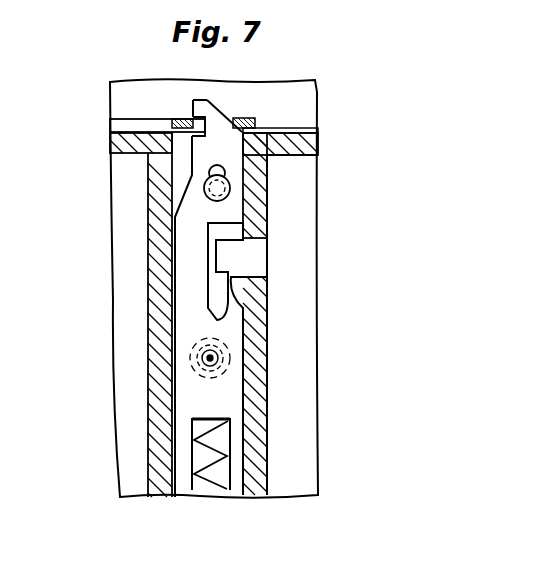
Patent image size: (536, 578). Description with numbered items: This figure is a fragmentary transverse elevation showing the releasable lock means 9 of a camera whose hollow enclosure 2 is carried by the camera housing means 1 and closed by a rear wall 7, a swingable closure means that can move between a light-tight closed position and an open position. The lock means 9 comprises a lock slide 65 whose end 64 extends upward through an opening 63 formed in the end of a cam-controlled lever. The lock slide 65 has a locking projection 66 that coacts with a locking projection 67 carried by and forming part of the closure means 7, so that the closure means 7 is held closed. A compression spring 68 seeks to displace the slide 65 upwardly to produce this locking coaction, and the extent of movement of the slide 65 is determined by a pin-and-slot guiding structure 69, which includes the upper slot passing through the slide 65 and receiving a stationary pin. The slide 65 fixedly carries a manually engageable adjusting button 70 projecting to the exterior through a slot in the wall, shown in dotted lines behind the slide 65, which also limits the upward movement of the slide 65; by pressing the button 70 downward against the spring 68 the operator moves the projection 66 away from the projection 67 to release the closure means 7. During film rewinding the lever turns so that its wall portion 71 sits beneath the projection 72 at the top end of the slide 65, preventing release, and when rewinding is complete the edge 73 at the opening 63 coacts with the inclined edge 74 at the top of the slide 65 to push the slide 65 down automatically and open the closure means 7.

The housing 1 is at (110, 90).
The hollow enclosure 2 is at (297, 108).
The rear wall 7 is at (298, 305).
The releasable lock means 9 is at (170, 250).
The opening 63 is at (193, 116).
The end of lock slide 64 is at (212, 118).
The lock slide 65 is at (225, 398).
The locking projection 66 is at (247, 310).
The locking projection 67 is at (226, 270).
The compression spring 68 is at (210, 492).
The pin-and-slot guiding structure 69 is at (232, 178).
The adjusting button 70 is at (197, 357).
The wall portion 71 is at (173, 121).
The projection 72 is at (208, 117).
The edge 73 is at (238, 118).
The inclined edge 74 is at (218, 108).